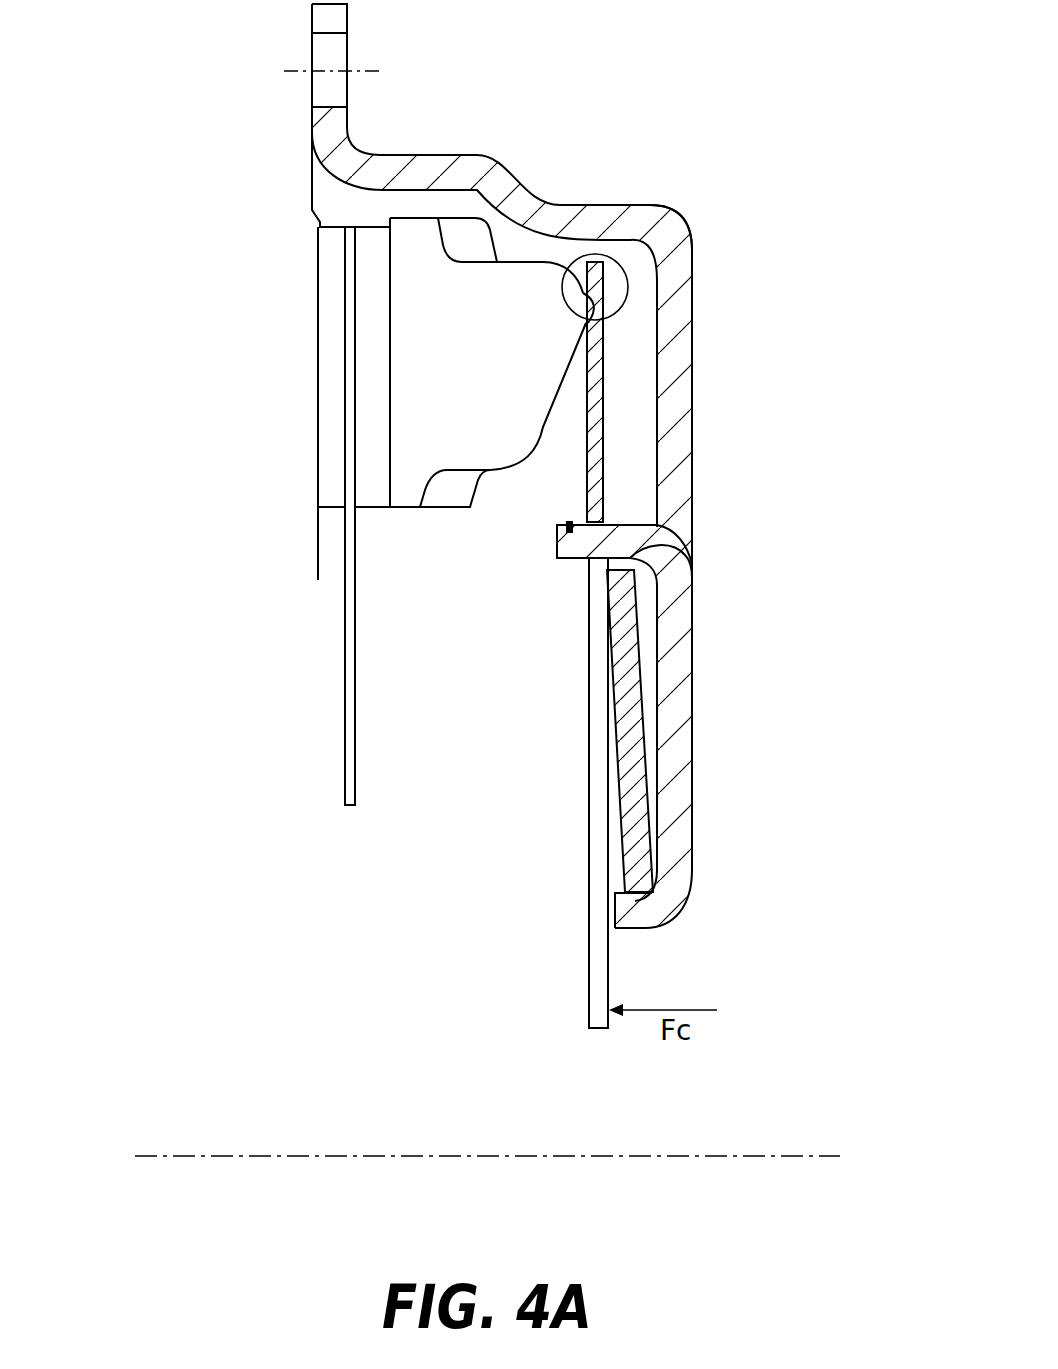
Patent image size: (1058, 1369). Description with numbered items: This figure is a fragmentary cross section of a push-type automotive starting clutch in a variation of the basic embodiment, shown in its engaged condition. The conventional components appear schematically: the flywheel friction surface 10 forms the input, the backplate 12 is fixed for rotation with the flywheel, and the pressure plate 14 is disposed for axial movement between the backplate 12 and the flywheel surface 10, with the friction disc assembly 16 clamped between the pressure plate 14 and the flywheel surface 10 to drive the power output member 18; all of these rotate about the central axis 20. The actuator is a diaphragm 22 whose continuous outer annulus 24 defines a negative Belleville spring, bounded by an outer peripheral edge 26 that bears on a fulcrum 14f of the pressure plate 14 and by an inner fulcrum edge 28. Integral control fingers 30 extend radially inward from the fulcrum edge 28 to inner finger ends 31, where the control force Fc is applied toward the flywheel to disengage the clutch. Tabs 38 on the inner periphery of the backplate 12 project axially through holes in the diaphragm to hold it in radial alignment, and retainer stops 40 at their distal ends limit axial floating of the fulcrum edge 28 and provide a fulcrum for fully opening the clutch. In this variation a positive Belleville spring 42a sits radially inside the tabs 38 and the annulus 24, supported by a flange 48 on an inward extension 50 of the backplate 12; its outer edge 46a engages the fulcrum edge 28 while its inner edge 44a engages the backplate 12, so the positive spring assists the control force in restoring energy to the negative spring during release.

The flywheel friction surface 10 is at (318, 552).
The backplate 12 is at (573, 218).
The pressure plate 14 is at (495, 395).
The fulcrum 14f is at (582, 322).
The friction disc assembly 16 is at (318, 400).
The power output member 18 is at (347, 752).
The central axis 20 is at (738, 1158).
The diaphragm 22 is at (589, 647).
The outer annulus 24 is at (598, 353).
The outer peripheral edge 26 is at (605, 266).
The inner fulcrum edge 28 is at (604, 522).
The control fingers 30 is at (597, 812).
The inner finger ends 31 is at (593, 1028).
The tabs 38 is at (640, 537).
The retainer stops 40 is at (568, 523).
The positive Belleville spring 42a is at (632, 705).
The inner edge 44a is at (660, 900).
The outer edge 46a is at (680, 547).
The flange 48 is at (647, 928).
The inward extension 50 is at (672, 758).